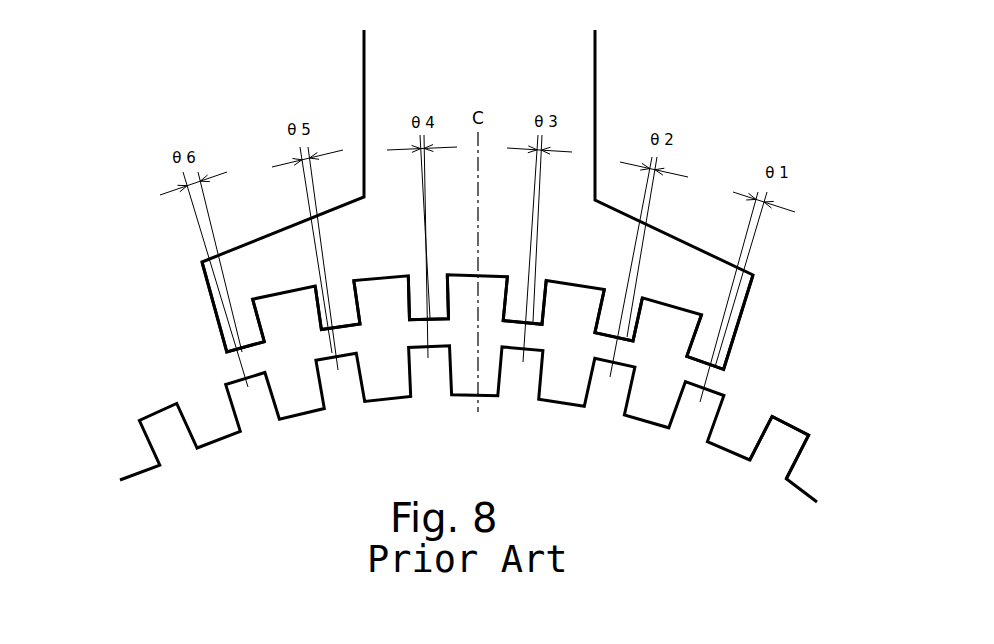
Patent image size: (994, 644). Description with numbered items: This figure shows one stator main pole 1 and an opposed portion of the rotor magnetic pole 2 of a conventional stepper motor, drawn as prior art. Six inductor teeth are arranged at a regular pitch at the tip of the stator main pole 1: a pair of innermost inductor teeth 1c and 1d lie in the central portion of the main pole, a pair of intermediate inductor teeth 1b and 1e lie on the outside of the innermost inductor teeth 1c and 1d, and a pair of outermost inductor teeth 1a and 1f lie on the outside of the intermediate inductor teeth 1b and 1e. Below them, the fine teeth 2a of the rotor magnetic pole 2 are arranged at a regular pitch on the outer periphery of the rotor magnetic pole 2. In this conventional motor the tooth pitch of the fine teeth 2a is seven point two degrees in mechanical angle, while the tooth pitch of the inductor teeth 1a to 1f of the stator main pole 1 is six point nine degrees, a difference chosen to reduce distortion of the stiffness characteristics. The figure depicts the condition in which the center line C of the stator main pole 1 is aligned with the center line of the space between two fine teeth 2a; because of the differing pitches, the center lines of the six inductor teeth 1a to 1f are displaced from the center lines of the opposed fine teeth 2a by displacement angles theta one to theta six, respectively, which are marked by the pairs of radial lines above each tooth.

The stator main pole 1 is at (575, 77).
The outermost inductor tooth 1a is at (713, 372).
The intermediate inductor tooth 1b is at (627, 336).
The innermost inductor tooth 1c is at (533, 326).
The innermost inductor tooth 1d is at (418, 318).
The intermediate inductor tooth 1e is at (327, 328).
The outermost inductor tooth 1f is at (233, 353).
The rotor magnetic pole 2 is at (517, 453).
The fine teeth 2a is at (788, 448).